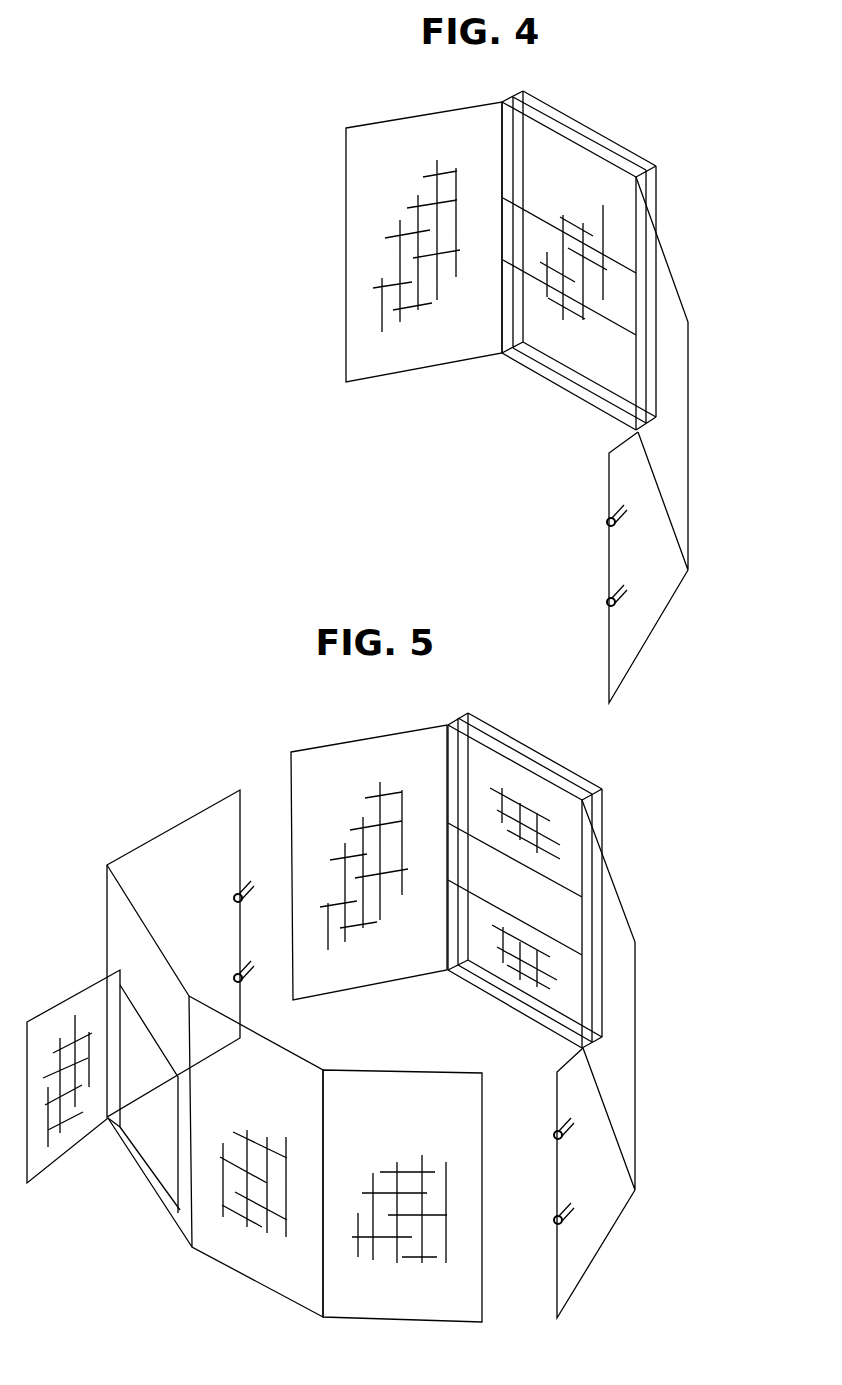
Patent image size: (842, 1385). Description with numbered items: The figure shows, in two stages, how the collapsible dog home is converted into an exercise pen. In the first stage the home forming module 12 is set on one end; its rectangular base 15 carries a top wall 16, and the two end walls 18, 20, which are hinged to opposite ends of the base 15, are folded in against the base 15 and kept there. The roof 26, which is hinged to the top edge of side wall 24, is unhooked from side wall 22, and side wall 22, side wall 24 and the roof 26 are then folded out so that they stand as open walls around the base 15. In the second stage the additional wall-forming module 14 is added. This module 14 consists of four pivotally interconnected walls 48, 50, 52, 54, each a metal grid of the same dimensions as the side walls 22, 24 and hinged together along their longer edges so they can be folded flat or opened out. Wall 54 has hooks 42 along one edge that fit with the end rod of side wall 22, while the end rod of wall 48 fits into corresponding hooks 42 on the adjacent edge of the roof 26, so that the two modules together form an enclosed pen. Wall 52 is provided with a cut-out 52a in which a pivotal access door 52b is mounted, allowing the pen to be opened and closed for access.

In FIG. 4, the home forming module 12 is at (609, 249).
In FIG. 5, the home forming module 12 is at (555, 853).
In FIG. 5, the additional wall-forming module 14 is at (254, 1046).
In FIG. 4, the rectangular base 15 is at (607, 140).
In FIG. 5, the rectangular base 15 is at (492, 738).
In FIG. 4, the top wall 16 is at (543, 140).
In FIG. 4, the end wall 18 is at (528, 146).
In FIG. 5, the end wall 18 is at (538, 792).
In FIG. 4, the end wall 20 is at (568, 345).
In FIG. 5, the end wall 20 is at (487, 957).
In FIG. 4, the side wall 22 is at (358, 150).
In FIG. 5, the side wall 22 is at (388, 745).
In FIG. 4, the side wall 24 is at (668, 285).
In FIG. 5, the side wall 24 is at (612, 900).
In FIG. 4, the roof 26 is at (613, 490).
In FIG. 5, the roof 26 is at (625, 1057).
In FIG. 4, the hooks 42 is at (612, 600).
In FIG. 5, the hooks 42 is at (557, 1218).
In FIG. 5, the wall 48 is at (383, 1307).
In FIG. 5, the wall 50 is at (247, 1255).
In FIG. 5, the wall 52 is at (109, 1091).
In FIG. 5, the cut-out 52a is at (185, 1218).
In FIG. 5, the pivotal access door 52b is at (56, 1012).
In FIG. 5, the wall 54 is at (135, 868).